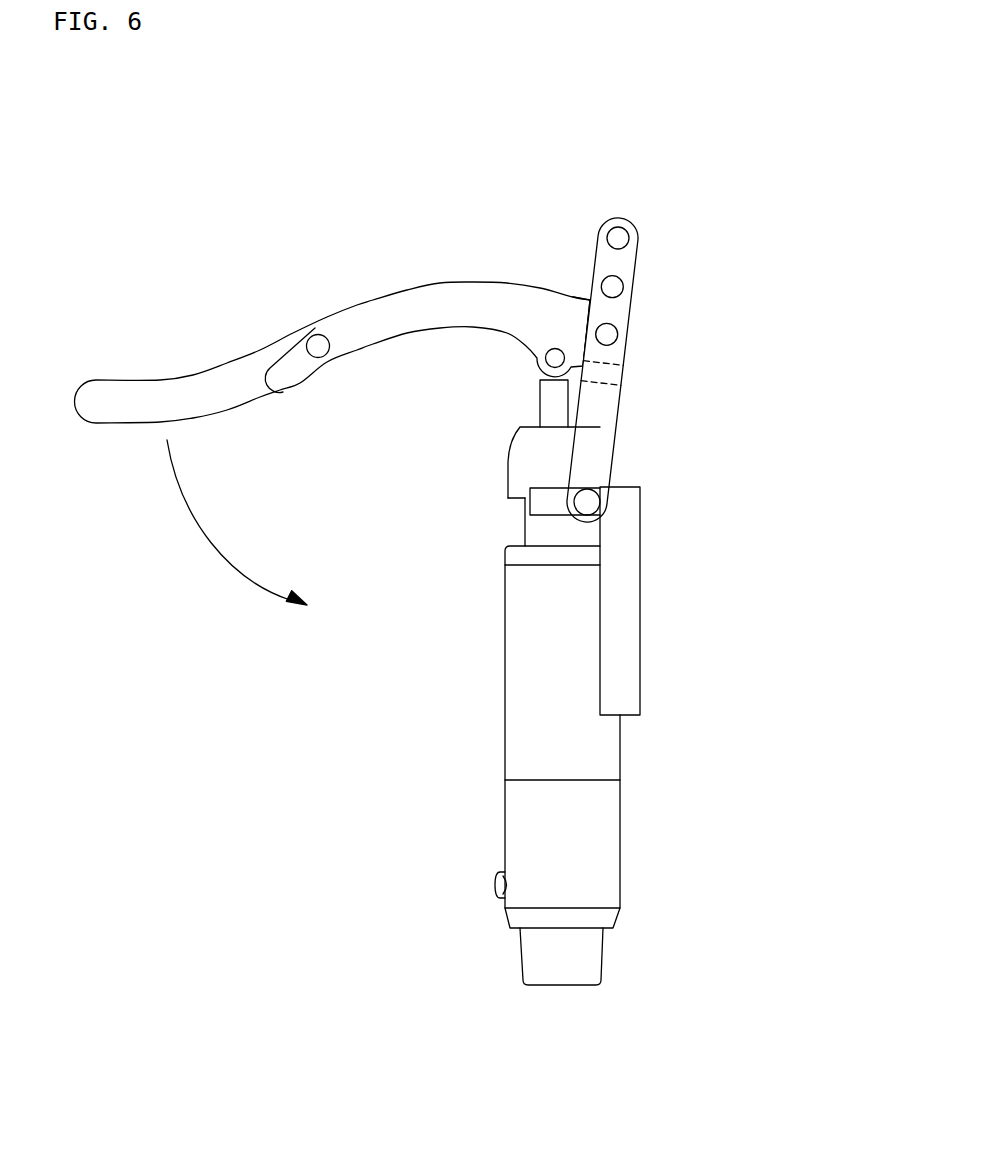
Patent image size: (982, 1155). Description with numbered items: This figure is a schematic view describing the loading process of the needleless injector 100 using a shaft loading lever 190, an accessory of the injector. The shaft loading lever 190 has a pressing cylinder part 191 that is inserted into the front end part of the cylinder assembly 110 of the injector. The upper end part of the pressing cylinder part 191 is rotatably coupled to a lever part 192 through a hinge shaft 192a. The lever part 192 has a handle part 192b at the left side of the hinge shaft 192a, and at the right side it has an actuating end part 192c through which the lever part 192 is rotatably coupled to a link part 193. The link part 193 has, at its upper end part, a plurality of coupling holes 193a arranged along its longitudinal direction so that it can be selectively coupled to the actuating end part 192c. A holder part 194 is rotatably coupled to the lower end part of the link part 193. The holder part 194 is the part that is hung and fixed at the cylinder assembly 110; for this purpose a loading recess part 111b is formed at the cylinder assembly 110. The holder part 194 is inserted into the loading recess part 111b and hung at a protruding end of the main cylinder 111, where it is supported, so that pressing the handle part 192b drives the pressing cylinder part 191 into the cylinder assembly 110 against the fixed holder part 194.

The needleless injector 100 is at (255, 100).
The cylinder assembly 110 is at (557, 706).
The main cylinder 111 is at (520, 480).
The loading recess part 111b is at (525, 527).
The shaft loading lever 190 is at (440, 362).
The pressing cylinder part 191 is at (540, 400).
The lever part 192 is at (333, 307).
The hinge shaft 192a is at (545, 360).
The handle part 192b is at (192, 392).
The actuating end part 192c is at (587, 297).
The link part 193 is at (686, 350).
The coupling holes 193a is at (627, 230).
The holder part 194 is at (640, 603).